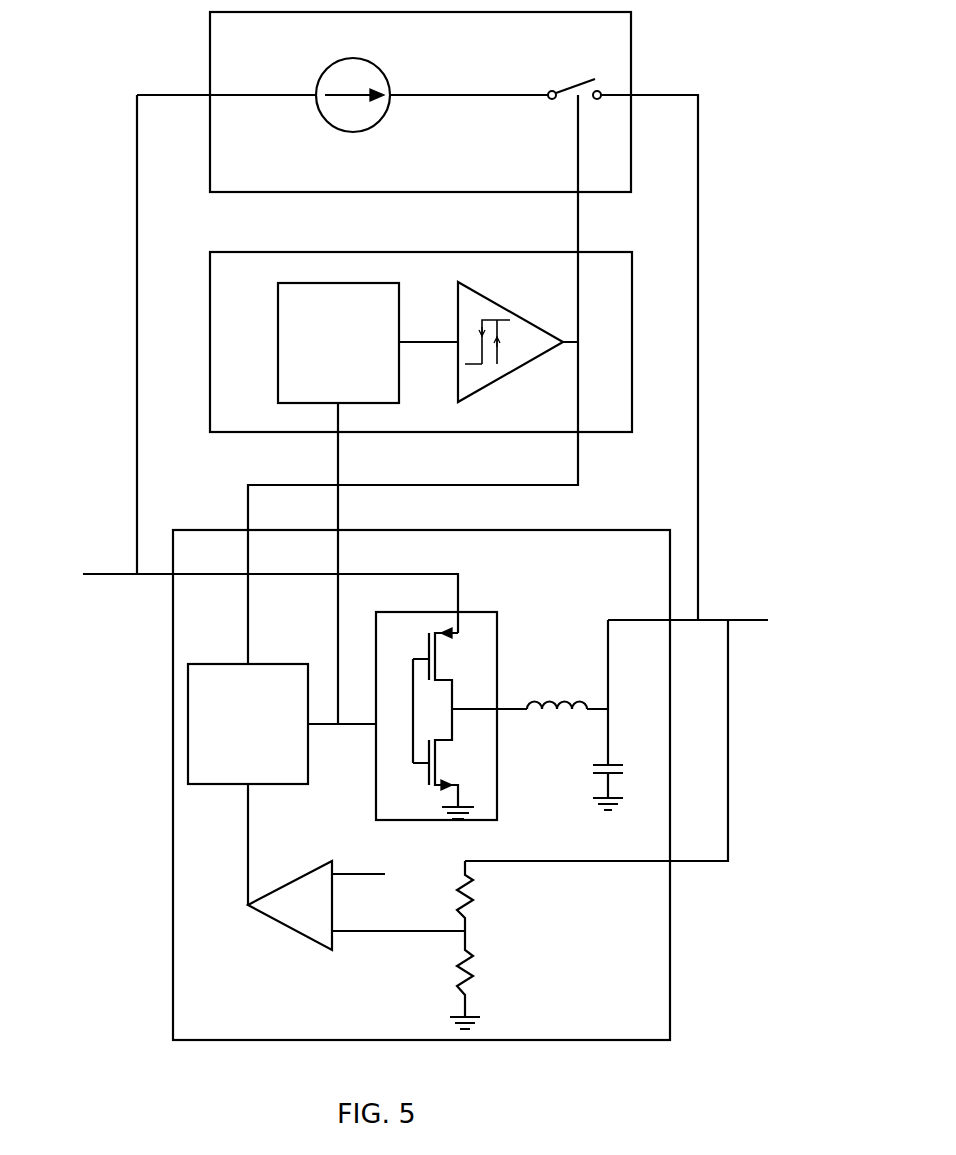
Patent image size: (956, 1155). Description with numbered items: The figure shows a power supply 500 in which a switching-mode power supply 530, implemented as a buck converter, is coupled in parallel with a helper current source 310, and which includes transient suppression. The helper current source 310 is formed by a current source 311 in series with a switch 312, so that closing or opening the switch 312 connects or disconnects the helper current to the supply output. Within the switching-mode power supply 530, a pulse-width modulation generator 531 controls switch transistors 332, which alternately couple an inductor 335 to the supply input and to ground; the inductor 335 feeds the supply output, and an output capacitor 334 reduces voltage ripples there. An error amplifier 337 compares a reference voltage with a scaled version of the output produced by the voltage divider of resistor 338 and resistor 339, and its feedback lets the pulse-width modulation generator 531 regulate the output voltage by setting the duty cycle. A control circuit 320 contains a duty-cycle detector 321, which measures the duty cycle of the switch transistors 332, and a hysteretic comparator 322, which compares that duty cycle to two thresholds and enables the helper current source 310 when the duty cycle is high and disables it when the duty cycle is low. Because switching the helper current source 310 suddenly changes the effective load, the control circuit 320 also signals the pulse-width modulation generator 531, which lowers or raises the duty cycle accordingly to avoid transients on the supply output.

The power supply 500 is at (752, 29).
The helper current source 310 is at (210, 36).
The current source 311 is at (323, 118).
The switch 312 is at (576, 87).
The control circuit 320 is at (210, 380).
The duty-cycle detector 321 is at (278, 312).
The comparator 322 is at (512, 373).
The switching-mode power supply 530 is at (173, 997).
The pulse-width modulation generator 531 is at (225, 785).
The switch transistors 332 is at (497, 612).
The output capacitor 334 is at (592, 773).
The inductor 335 is at (550, 697).
The error amplifier 337 is at (300, 935).
The resistor 338 is at (472, 906).
The resistor 339 is at (472, 982).